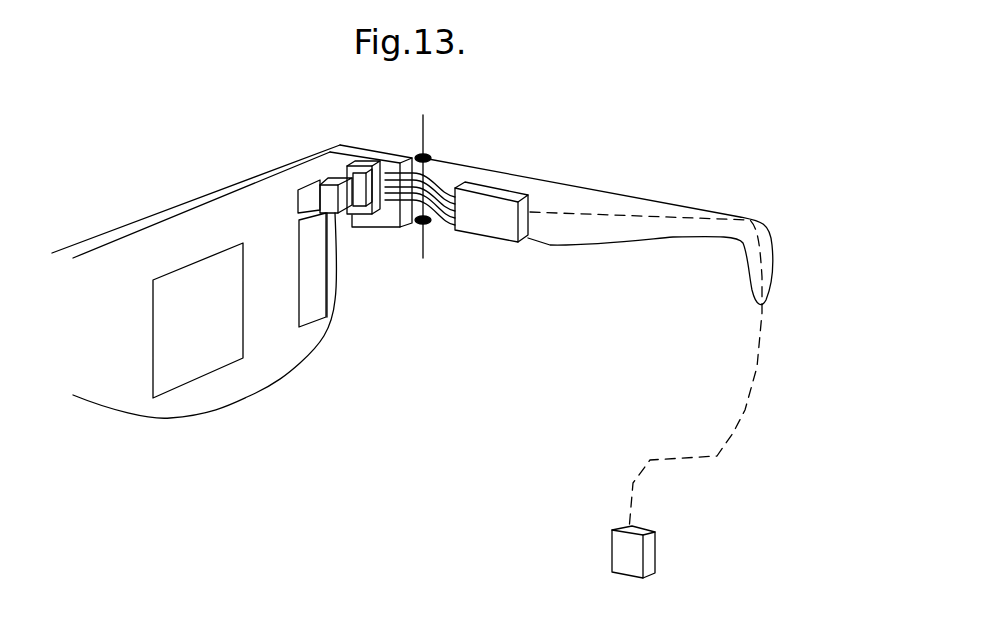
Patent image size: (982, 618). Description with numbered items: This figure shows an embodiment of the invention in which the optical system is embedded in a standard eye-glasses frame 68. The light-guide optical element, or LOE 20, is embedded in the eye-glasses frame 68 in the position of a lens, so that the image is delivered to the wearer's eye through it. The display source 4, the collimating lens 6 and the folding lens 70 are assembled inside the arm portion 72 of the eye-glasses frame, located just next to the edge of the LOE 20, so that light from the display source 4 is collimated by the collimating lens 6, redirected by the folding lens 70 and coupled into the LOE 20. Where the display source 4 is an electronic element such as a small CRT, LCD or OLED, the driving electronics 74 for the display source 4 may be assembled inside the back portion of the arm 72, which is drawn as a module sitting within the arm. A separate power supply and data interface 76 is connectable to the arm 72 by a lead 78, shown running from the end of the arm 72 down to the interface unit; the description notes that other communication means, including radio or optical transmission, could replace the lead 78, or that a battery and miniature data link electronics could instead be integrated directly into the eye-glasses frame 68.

The eye-glasses frame 68 is at (168, 208).
The LOE 20 is at (253, 357).
The collimating lens 6 is at (325, 180).
The folding lens 70 is at (338, 173).
The display source 4 is at (363, 166).
The driving electronics 74 is at (490, 190).
The arm portion 72 is at (567, 182).
The lead 78 is at (748, 382).
The power supply and data interface 76 is at (610, 542).